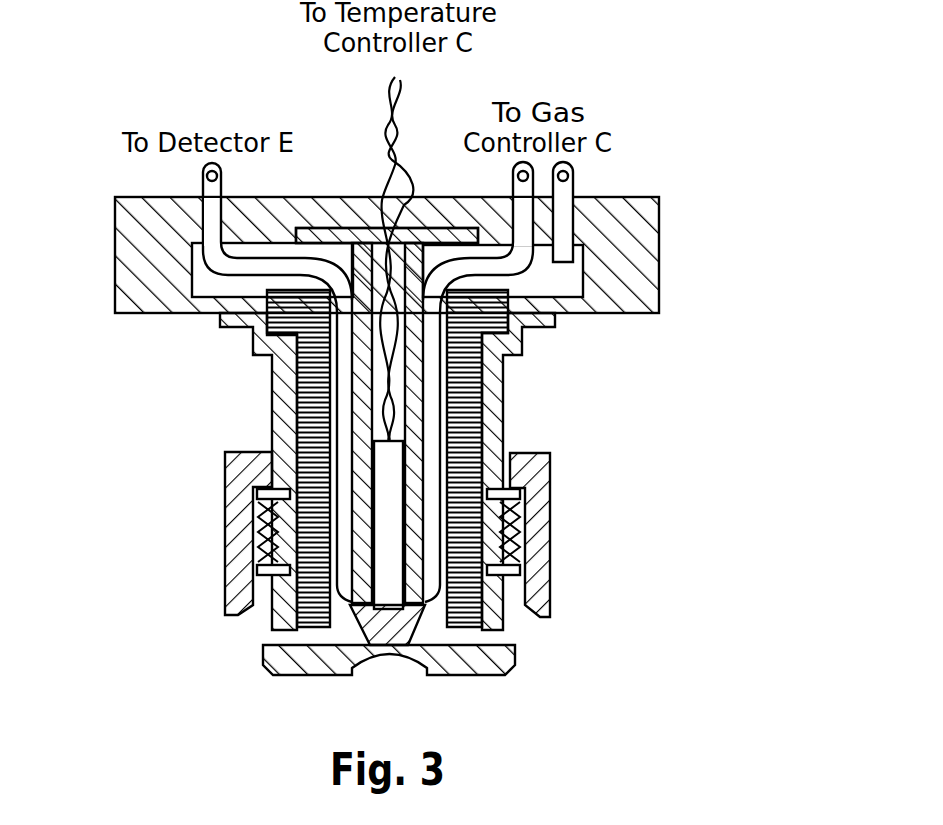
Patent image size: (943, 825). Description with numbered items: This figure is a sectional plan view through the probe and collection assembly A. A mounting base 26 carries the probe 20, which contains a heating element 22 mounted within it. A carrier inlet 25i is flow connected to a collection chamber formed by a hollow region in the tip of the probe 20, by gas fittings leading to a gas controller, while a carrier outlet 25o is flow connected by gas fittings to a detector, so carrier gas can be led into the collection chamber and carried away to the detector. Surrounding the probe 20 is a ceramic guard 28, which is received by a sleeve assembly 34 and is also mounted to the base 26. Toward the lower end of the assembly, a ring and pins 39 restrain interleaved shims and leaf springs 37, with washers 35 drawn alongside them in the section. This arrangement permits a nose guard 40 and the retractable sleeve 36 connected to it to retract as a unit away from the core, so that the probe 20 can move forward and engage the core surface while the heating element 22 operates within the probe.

The probe 20 is at (393, 604).
The heating element 22 is at (376, 588).
The carrier inlet 25i is at (512, 268).
The carrier outlet 25o is at (212, 305).
The mounting base 26 is at (655, 243).
The ceramic guard 28 is at (479, 430).
The sleeve assembly 34 is at (499, 374).
The washer 35 is at (512, 492).
The retractable sleeve 36 is at (552, 530).
The interleaved shims and leaf springs 37 is at (503, 517).
The ring and pins 39 is at (508, 572).
The nose guard 40 is at (470, 676).
The probe and collection assembly A is at (143, 492).